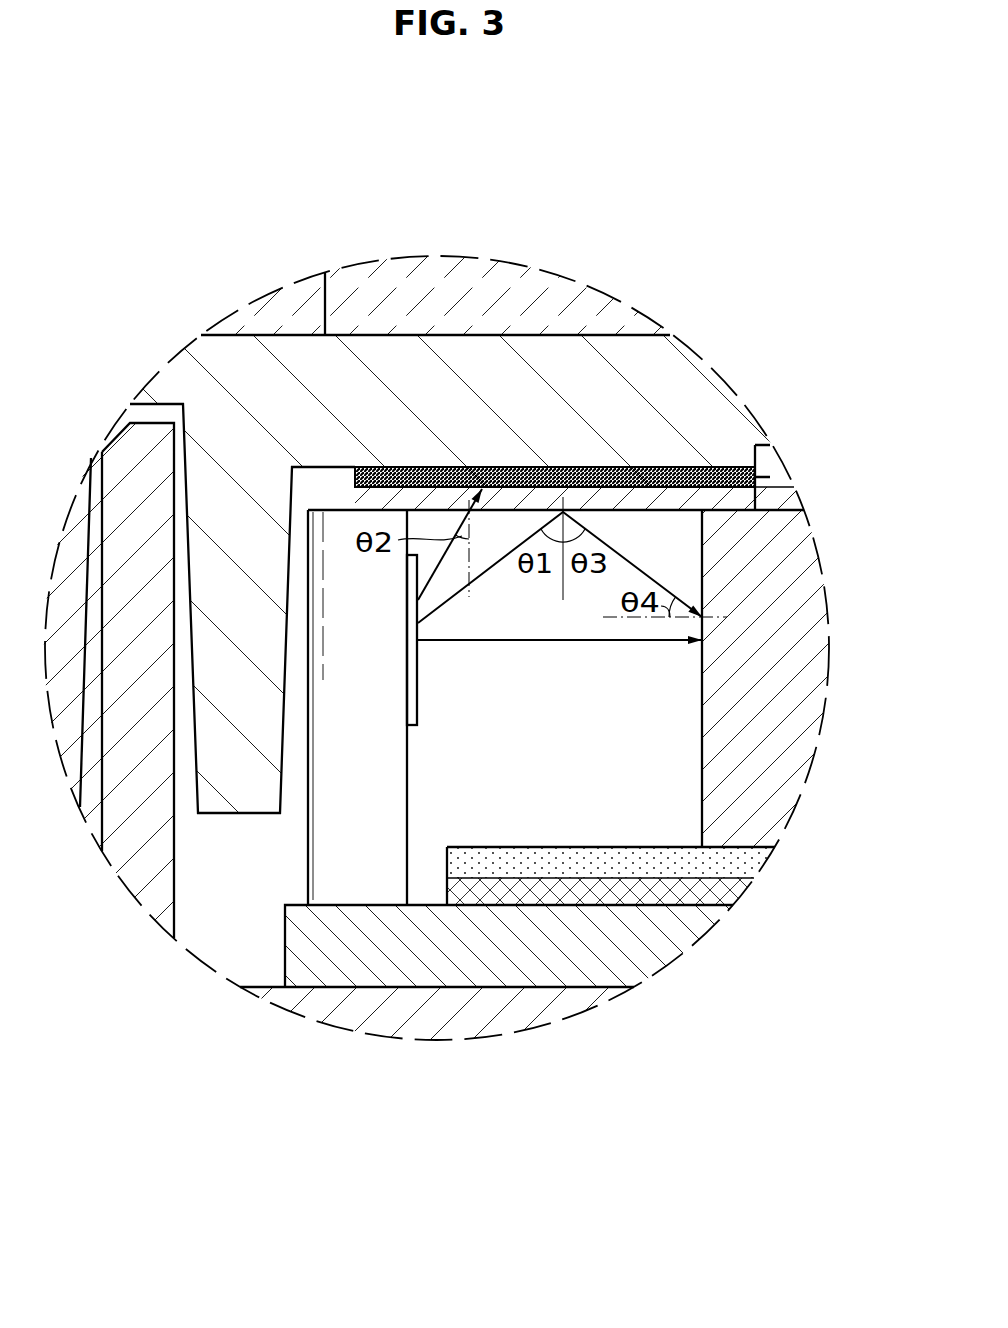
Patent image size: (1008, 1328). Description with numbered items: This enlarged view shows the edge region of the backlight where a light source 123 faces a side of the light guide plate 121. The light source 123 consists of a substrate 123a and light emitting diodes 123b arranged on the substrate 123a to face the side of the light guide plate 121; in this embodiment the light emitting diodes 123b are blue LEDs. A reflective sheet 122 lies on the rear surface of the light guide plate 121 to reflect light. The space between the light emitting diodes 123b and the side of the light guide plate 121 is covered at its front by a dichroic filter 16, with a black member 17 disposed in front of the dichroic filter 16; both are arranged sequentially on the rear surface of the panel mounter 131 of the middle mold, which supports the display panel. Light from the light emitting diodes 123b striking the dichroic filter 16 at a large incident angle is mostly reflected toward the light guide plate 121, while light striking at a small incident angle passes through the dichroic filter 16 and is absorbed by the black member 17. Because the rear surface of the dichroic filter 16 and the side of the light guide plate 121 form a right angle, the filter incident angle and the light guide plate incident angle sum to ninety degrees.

The panel mounter 131 is at (487, 365).
The black member 17 is at (688, 468).
The dichroic filter 16 is at (743, 500).
The light guide plate 121 is at (780, 752).
The reflective sheet 122 is at (747, 863).
The light source 123 is at (457, 845).
The substrate 123a is at (367, 957).
The light emitting diodes 123b is at (317, 843).